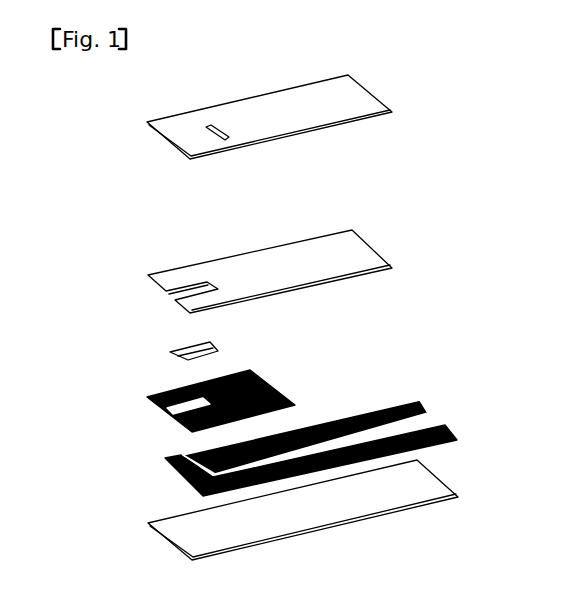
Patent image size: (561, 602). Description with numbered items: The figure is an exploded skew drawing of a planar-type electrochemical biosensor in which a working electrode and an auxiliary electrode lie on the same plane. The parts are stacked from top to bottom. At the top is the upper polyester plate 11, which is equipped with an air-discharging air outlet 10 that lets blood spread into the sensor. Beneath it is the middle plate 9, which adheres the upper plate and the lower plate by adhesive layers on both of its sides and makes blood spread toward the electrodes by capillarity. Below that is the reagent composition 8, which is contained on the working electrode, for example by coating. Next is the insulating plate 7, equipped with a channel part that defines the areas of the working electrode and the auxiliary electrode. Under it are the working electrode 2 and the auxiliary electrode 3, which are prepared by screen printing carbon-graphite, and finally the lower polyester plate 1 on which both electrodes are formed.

The lower plate 1 is at (195, 535).
The working electrode 2 is at (197, 482).
The auxiliary electrode 3 is at (182, 455).
The insulating plate 7 is at (167, 394).
The reagent composition 8 is at (178, 350).
The middle plate 9 is at (162, 276).
The air outlet 10 is at (208, 128).
The upper plate 11 is at (342, 99).